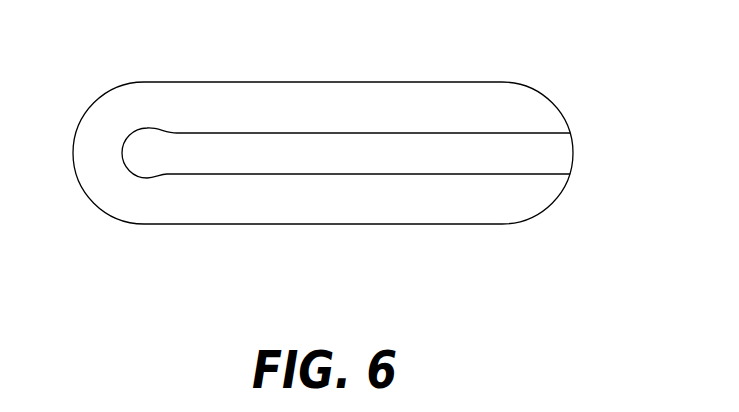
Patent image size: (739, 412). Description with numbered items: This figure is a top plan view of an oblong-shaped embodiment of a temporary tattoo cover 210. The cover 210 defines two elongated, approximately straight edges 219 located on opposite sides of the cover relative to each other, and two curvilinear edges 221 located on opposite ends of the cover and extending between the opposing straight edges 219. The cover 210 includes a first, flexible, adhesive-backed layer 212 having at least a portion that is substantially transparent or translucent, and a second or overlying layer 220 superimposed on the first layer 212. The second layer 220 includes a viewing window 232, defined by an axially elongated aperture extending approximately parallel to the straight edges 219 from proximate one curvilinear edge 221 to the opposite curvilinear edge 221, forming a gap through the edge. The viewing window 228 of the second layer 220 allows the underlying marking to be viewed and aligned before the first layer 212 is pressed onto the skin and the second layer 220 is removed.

The cover 210 is at (328, 145).
The first layer 212 is at (515, 150).
The elongated straight edges 219 is at (483, 82).
The second layer 220 is at (378, 213).
The curvilinear edges 221 is at (92, 123).
The viewing window 228 is at (148, 152).
The viewing window 232 is at (557, 155).